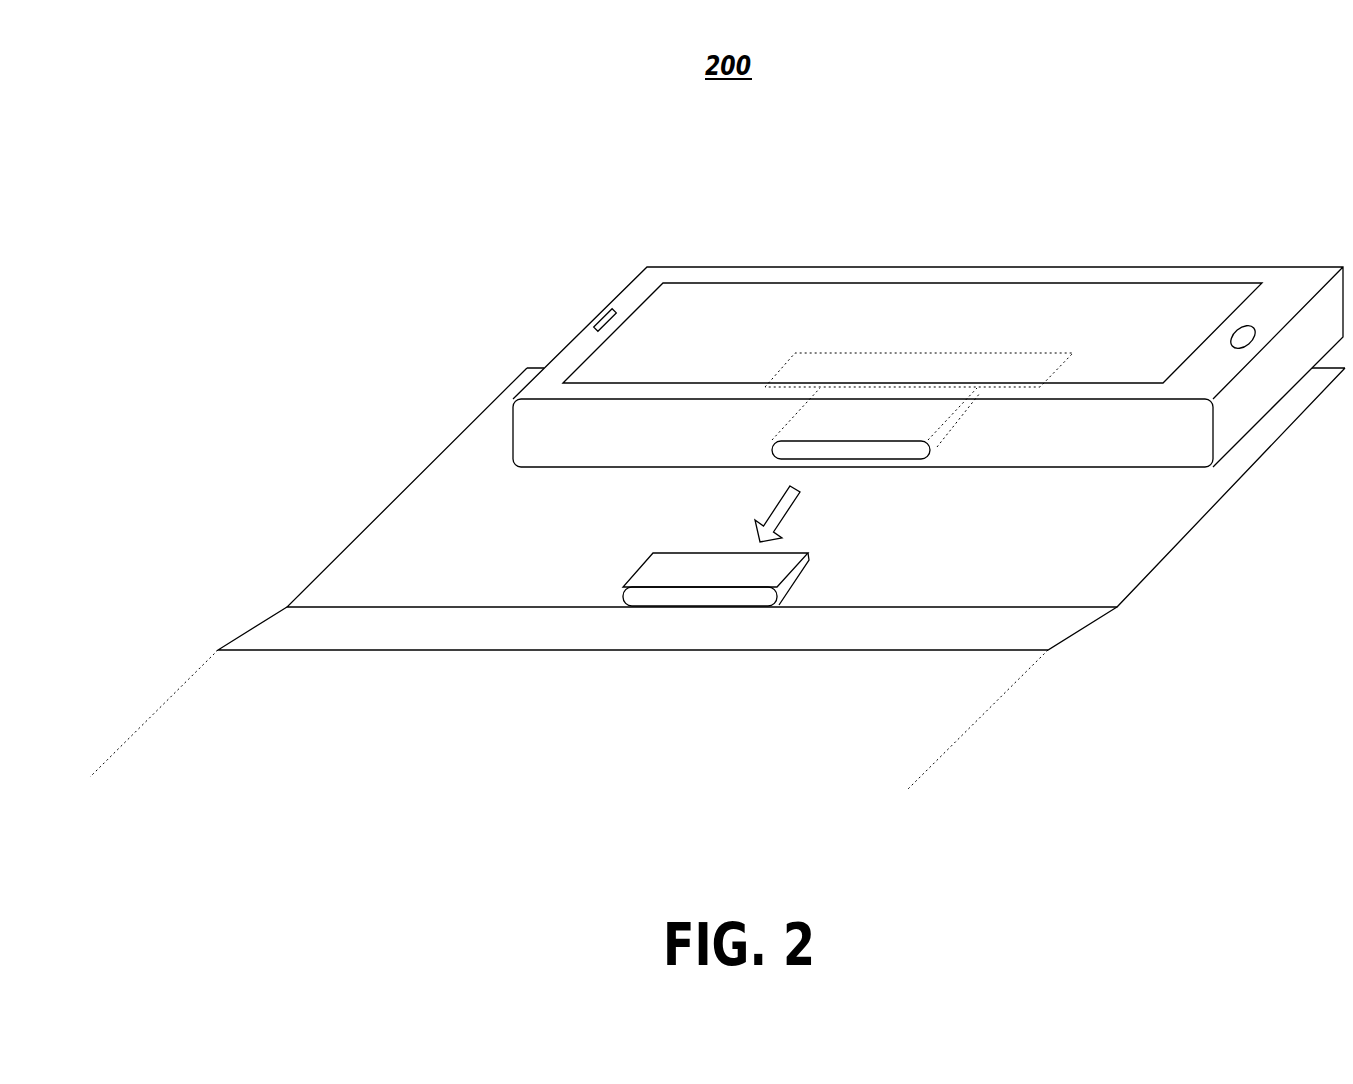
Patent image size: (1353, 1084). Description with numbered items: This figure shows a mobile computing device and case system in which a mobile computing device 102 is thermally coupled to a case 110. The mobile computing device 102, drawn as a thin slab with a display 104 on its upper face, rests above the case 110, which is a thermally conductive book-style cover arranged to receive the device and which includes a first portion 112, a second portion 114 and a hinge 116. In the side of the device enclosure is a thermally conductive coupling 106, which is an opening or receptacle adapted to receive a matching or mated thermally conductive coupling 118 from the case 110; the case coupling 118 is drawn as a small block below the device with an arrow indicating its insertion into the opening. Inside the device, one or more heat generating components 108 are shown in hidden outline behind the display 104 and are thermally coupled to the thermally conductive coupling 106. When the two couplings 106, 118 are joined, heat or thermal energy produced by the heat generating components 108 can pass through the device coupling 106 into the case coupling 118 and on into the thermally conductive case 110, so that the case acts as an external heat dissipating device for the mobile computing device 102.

The mobile computing device 102 is at (928, 328).
The display 104 is at (697, 303).
The thermally conductive coupling 106 is at (803, 425).
The heat generating components 108 is at (834, 363).
The case 110 is at (497, 395).
The first portion 112 is at (480, 457).
The second portion 114 is at (273, 717).
The hinge 116 is at (1028, 630).
The thermally conductive coupling 118 is at (655, 587).